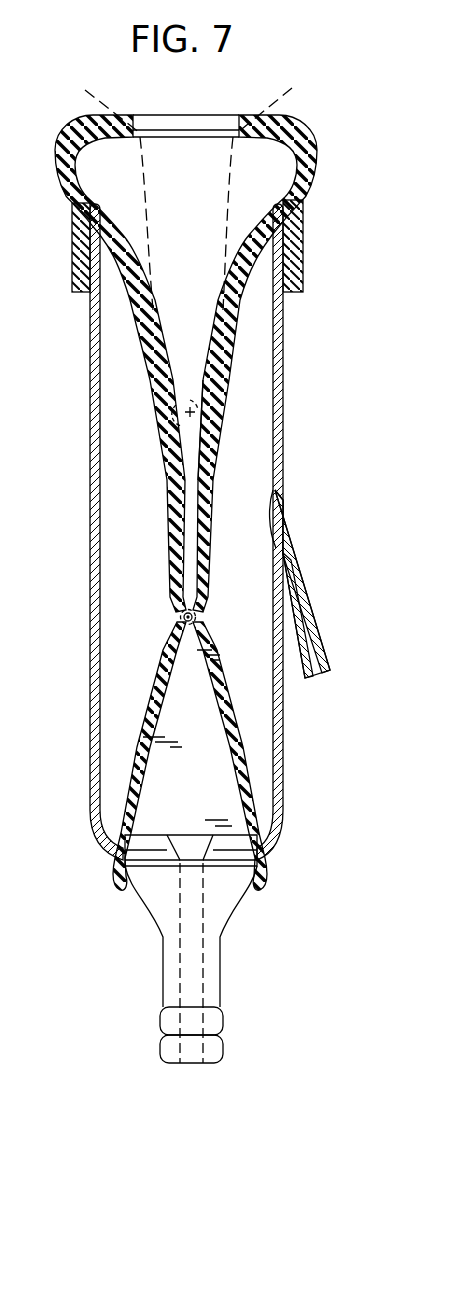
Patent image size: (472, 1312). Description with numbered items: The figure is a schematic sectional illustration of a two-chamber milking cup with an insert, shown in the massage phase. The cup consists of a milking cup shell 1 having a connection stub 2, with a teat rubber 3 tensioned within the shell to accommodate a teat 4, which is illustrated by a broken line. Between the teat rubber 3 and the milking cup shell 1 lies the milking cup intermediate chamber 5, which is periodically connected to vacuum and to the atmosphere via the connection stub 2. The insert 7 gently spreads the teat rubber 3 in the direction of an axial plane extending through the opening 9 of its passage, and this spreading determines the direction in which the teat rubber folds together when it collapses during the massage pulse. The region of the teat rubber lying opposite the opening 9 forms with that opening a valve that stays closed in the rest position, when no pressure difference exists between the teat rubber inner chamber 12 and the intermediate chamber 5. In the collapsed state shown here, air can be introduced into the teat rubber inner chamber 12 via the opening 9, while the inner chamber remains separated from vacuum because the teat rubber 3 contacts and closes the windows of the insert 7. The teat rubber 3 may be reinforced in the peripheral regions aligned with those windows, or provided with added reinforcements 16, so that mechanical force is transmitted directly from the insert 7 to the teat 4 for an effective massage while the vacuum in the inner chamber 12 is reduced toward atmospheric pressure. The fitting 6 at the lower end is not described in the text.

The milking cup shell 1 is at (166, 530).
The connection stub 2 is at (303, 616).
The teat rubber 3 is at (170, 517).
The teat 4 is at (183, 415).
The milking cup intermediate chamber 5 is at (117, 382).
The hose connector 6 is at (163, 918).
The insert 7 is at (177, 702).
The opening 9 is at (197, 617).
The teat rubber inner chamber 12 is at (188, 523).
The reinforcements 16 is at (213, 423).